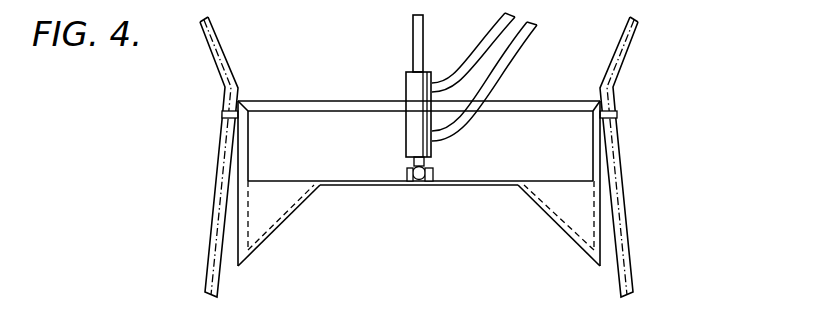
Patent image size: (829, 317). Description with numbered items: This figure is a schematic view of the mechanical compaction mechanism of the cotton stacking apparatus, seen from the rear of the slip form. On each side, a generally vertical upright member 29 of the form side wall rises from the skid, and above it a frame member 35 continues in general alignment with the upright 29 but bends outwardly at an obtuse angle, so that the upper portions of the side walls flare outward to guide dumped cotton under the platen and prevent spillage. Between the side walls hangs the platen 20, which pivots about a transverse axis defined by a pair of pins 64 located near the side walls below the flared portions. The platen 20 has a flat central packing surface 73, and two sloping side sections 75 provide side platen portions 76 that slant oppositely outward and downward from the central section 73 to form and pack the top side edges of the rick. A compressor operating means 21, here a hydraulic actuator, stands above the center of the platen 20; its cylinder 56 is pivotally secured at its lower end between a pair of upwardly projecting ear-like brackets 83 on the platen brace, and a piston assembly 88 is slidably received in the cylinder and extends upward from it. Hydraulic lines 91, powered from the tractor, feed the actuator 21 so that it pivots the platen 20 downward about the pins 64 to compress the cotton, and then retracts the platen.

The platen 20 is at (518, 117).
The compressor operating means 21 is at (415, 86).
The upright members 29 is at (216, 229).
The frame members 35 is at (214, 50).
The hydraulic cylinder 56 is at (412, 96).
The pins 64 is at (222, 114).
The central packing surface 73 is at (461, 190).
The sloping side sections 75 is at (247, 171).
The side platen portions 76 is at (279, 226).
The ear-like brackets 83 is at (407, 174).
The piston assembly 88 is at (418, 46).
The hydraulic lines 91 is at (512, 14).